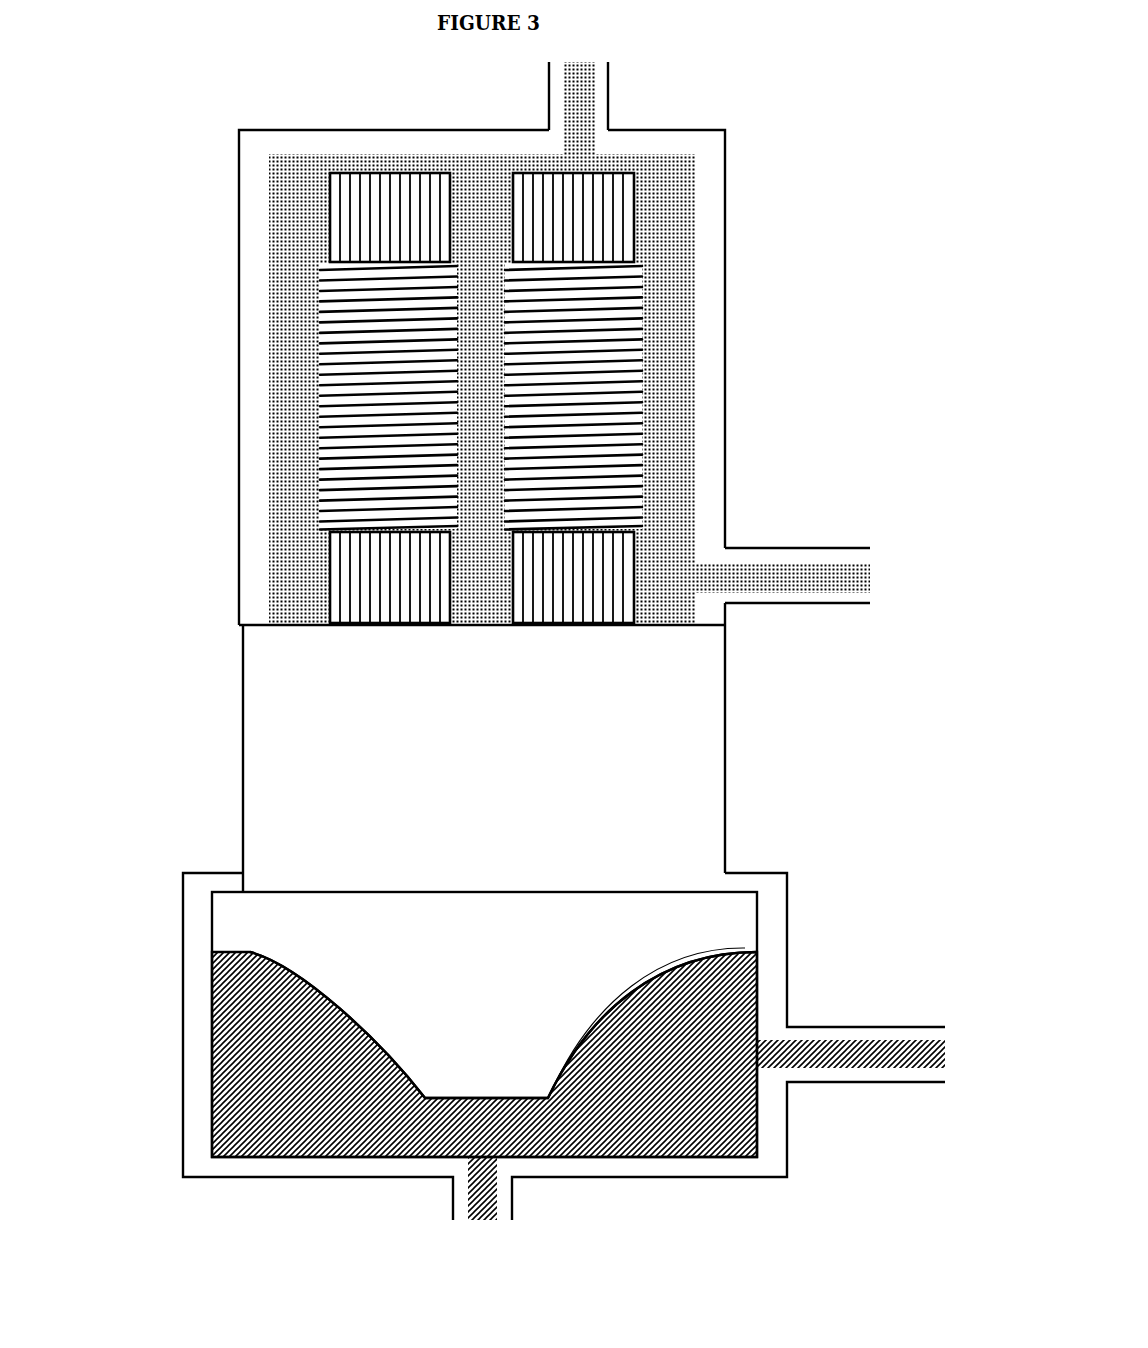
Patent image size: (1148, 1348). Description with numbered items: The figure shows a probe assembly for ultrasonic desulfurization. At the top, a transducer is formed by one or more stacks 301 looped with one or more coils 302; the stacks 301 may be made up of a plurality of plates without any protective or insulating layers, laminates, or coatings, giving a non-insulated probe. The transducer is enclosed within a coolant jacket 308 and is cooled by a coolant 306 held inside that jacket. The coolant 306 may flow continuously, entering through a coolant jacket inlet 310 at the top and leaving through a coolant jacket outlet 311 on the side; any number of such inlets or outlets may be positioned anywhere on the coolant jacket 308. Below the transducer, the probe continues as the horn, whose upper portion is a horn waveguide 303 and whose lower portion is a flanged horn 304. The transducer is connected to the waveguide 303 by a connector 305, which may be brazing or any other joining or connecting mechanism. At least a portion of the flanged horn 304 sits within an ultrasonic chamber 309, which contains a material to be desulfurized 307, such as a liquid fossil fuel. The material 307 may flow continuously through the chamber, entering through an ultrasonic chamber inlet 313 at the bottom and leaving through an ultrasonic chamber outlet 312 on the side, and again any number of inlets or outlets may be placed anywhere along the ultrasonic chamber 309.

The stack 301 is at (575, 230).
The coil 302 is at (588, 320).
The horn waveguide 303 is at (513, 771).
The flanged horn 304 is at (515, 1041).
The connector 305 is at (637, 625).
The coolant 306 is at (660, 425).
The material to be desulfurized 307 is at (238, 1155).
The coolant jacket 308 is at (253, 295).
The ultrasonic chamber 309 is at (197, 1031).
The coolant jacket inlet 310 is at (578, 93).
The coolant jacket outlet 311 is at (802, 575).
The ultrasonic chamber outlet 312 is at (853, 1050).
The ultrasonic chamber inlet 313 is at (497, 1200).